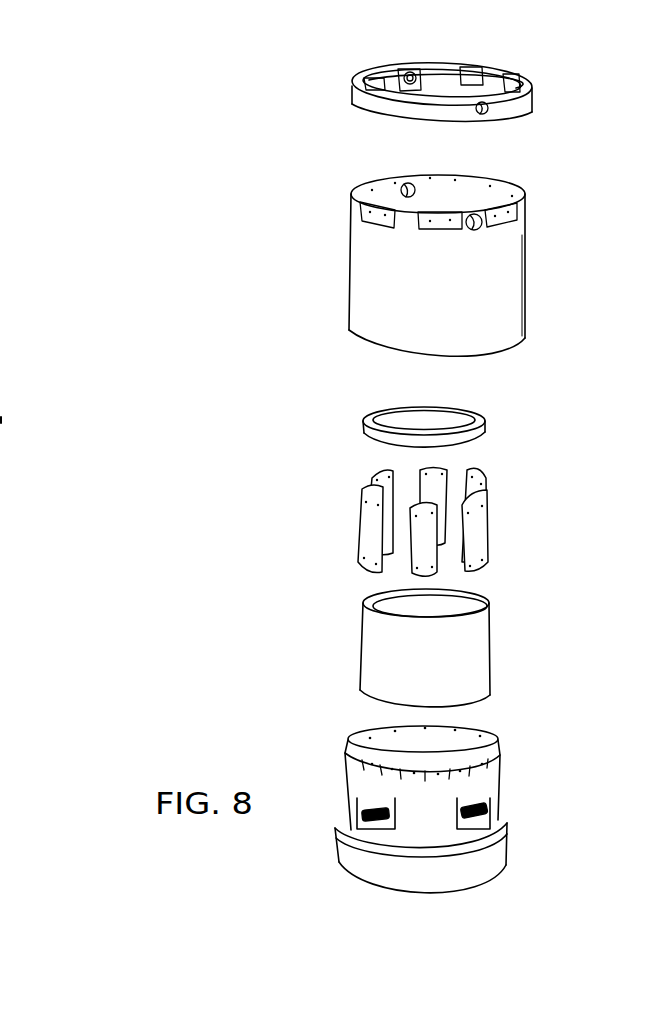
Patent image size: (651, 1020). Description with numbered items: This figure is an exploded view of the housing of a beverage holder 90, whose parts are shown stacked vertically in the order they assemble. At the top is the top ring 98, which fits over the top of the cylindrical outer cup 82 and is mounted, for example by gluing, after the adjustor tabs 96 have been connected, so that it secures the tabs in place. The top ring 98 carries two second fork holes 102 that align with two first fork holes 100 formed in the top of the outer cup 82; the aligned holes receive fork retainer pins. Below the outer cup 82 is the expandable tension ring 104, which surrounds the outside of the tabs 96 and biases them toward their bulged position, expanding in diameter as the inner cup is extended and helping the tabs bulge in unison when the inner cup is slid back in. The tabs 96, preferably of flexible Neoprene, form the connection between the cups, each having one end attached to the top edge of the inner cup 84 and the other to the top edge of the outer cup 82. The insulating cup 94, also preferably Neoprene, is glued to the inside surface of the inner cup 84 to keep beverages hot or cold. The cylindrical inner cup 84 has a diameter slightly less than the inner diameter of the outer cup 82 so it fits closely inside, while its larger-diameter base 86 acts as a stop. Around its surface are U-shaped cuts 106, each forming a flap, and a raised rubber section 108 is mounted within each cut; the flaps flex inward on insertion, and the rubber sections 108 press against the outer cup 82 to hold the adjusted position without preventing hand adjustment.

The assembly 90 is at (287, 88).
The top ring 98 is at (535, 91).
The second fork holes 102 is at (413, 70).
The cylindrical outer cup 82 is at (528, 273).
The first fork holes 100 is at (408, 182).
The expandable tension ring 104 is at (488, 421).
The adjustor tabs 96 is at (490, 510).
The insulating cup 94 is at (492, 657).
The cylindrical inner cup 84 is at (500, 791).
The U-shaped cuts 106 is at (490, 800).
The rubber sections 108 is at (372, 800).
The base 86 is at (510, 842).